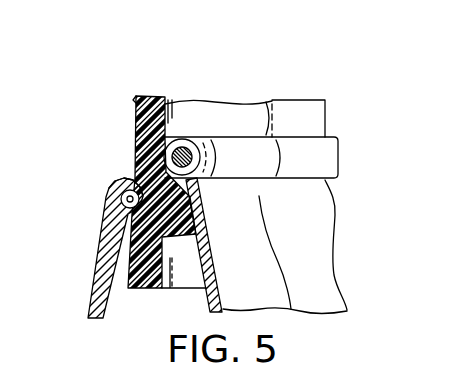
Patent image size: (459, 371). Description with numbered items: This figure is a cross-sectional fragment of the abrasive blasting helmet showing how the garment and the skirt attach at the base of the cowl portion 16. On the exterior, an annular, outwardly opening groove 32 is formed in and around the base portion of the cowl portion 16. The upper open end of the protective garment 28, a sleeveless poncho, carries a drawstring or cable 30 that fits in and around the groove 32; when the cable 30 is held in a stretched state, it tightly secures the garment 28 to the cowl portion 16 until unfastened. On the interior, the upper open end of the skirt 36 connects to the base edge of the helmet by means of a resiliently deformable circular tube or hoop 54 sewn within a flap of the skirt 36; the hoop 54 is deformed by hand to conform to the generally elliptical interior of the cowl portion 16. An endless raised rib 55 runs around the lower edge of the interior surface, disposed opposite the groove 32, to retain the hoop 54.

The cowl portion 16 is at (134, 117).
The protective garment 28 is at (101, 284).
The drawstring or cable 30 is at (113, 200).
The groove 32 is at (137, 178).
The skirt 36 is at (327, 250).
The circular tube or hoop 54 is at (185, 138).
The raised rib 55 is at (197, 220).